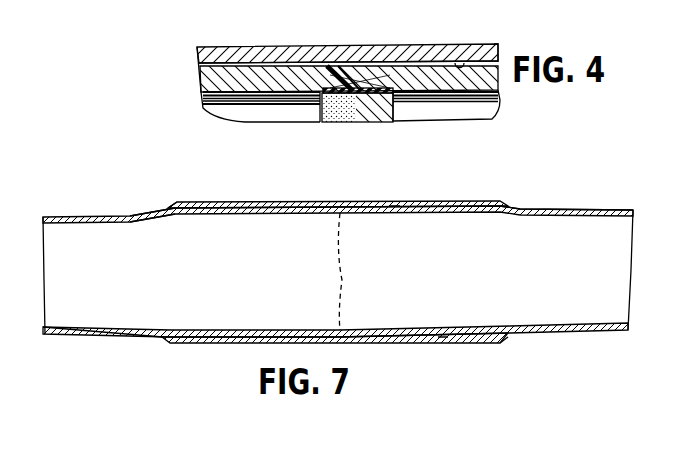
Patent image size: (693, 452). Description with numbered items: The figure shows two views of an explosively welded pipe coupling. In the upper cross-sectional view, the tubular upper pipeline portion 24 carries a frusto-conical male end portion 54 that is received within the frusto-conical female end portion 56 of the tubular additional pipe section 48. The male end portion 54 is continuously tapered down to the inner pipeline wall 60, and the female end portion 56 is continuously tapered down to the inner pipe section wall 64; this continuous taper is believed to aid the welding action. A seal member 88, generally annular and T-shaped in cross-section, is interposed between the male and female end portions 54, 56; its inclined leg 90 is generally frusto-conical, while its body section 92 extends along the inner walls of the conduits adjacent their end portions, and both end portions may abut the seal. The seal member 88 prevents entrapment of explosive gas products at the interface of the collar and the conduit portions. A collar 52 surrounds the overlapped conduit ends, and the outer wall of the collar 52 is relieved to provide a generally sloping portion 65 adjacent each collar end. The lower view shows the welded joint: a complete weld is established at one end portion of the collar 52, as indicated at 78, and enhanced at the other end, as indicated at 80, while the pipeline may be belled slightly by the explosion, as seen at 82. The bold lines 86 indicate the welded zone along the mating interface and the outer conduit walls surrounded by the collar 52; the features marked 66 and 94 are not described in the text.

In FIG. 4, the tubular upper pipeline portion 24 is at (192, 84).
In FIG. 4, the tubular additional pipe section 48 is at (501, 54).
In FIG. 4, the collar 52 is at (276, 40).
In FIG. 7, the collar 52 is at (420, 199).
In FIG. 4, the male end portion 54 is at (345, 70).
In FIG. 4, the female end portion 56 is at (352, 72).
In FIG. 4, the inner pipeline wall 60 is at (304, 108).
In FIG. 4, the inner pipe section wall 64 is at (497, 100).
In FIG. 4, the adhesive bead 66 is at (466, 62).
In FIG. 4, the seal member 88 is at (364, 82).
In FIG. 4, the leg of the T 90 is at (402, 68).
In FIG. 4, the body section 92 is at (352, 122).
In FIG. 7, the collar end portion weld 78 is at (168, 207).
In FIG. 7, the sloping portion 65 is at (192, 176).
In FIG. 7, the other collar end weld 80 is at (510, 340).
In FIG. 7, the deformation 82 is at (517, 205).
In FIG. 7, the bold lines 86 is at (340, 214).
In FIG. 7, the overlap layer 94 is at (398, 213).